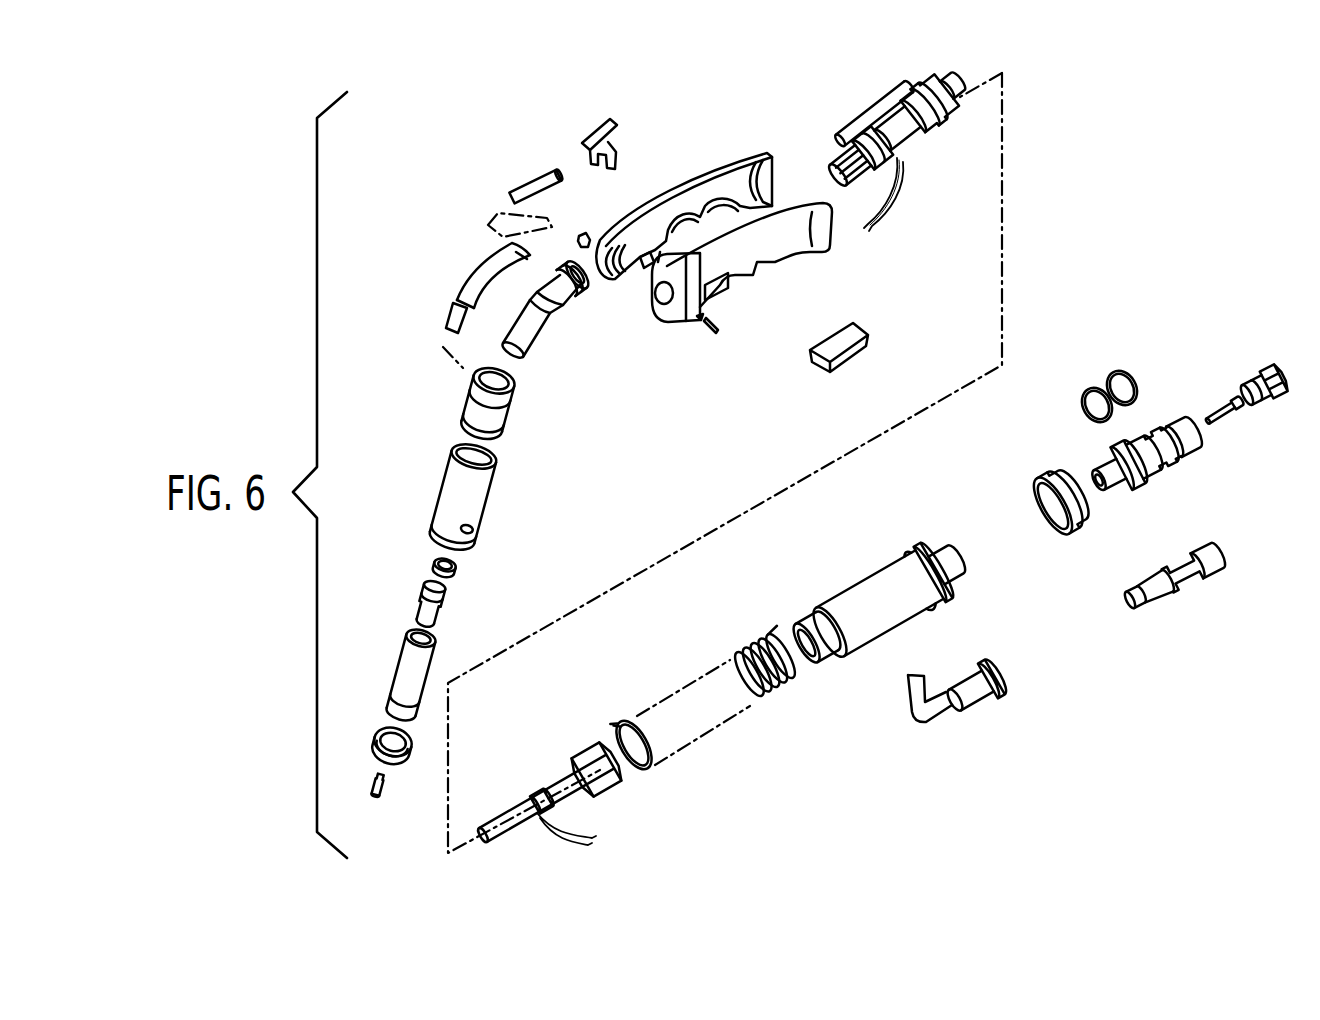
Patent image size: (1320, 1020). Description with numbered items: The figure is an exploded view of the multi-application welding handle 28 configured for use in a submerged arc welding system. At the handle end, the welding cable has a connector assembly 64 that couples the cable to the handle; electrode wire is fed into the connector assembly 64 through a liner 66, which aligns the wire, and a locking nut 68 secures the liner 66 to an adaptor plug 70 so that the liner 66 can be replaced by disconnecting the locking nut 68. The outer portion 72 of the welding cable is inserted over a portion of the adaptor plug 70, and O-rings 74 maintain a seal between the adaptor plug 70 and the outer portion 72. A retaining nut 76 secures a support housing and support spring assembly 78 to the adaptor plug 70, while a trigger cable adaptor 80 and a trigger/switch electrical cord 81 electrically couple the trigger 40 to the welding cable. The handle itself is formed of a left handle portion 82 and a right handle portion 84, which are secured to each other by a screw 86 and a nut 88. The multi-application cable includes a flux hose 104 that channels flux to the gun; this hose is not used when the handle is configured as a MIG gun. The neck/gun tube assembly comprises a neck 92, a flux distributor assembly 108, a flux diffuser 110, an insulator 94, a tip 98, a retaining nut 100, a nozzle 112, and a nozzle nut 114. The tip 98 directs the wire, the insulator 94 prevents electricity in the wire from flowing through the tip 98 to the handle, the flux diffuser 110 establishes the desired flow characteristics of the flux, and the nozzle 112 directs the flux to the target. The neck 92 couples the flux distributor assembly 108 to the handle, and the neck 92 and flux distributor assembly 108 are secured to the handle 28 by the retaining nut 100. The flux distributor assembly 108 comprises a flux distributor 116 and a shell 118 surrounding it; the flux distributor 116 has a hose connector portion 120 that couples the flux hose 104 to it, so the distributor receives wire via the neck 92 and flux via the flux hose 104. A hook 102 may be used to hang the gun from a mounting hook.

The multi-application welding handle 28 is at (671, 152).
The trigger 40 is at (845, 357).
The connector assembly 64 is at (492, 788).
The liner 66 is at (1212, 418).
The locking nut 68 is at (1268, 372).
The adaptor plug 70 is at (1153, 487).
The outer portion of the welding cable 72 is at (955, 100).
The O-rings 74 is at (1112, 367).
The retaining nut 76 is at (1073, 540).
The support housing and support spring assembly 78 is at (815, 606).
The trigger cable adaptor 80 is at (1150, 593).
The trigger/switch electrical cord 81 is at (967, 717).
The left handle portion 82 is at (787, 240).
The right handle portion 84 is at (720, 158).
The screw 86 is at (710, 336).
The nut 88 is at (582, 232).
The neck 92 is at (533, 340).
The insulator 94 is at (460, 565).
The tip 98 is at (385, 780).
The retaining nut 100 is at (583, 302).
The hook 102 is at (590, 128).
The flux hose 104 is at (533, 190).
The flux distributor assembly 108 is at (420, 396).
The flux diffuser 110 is at (436, 607).
The nozzle 112 is at (410, 668).
The nozzle nut 114 is at (373, 743).
The flux distributor 116 is at (512, 405).
The shell 118 is at (492, 502).
The hose connector portion 120 is at (460, 292).